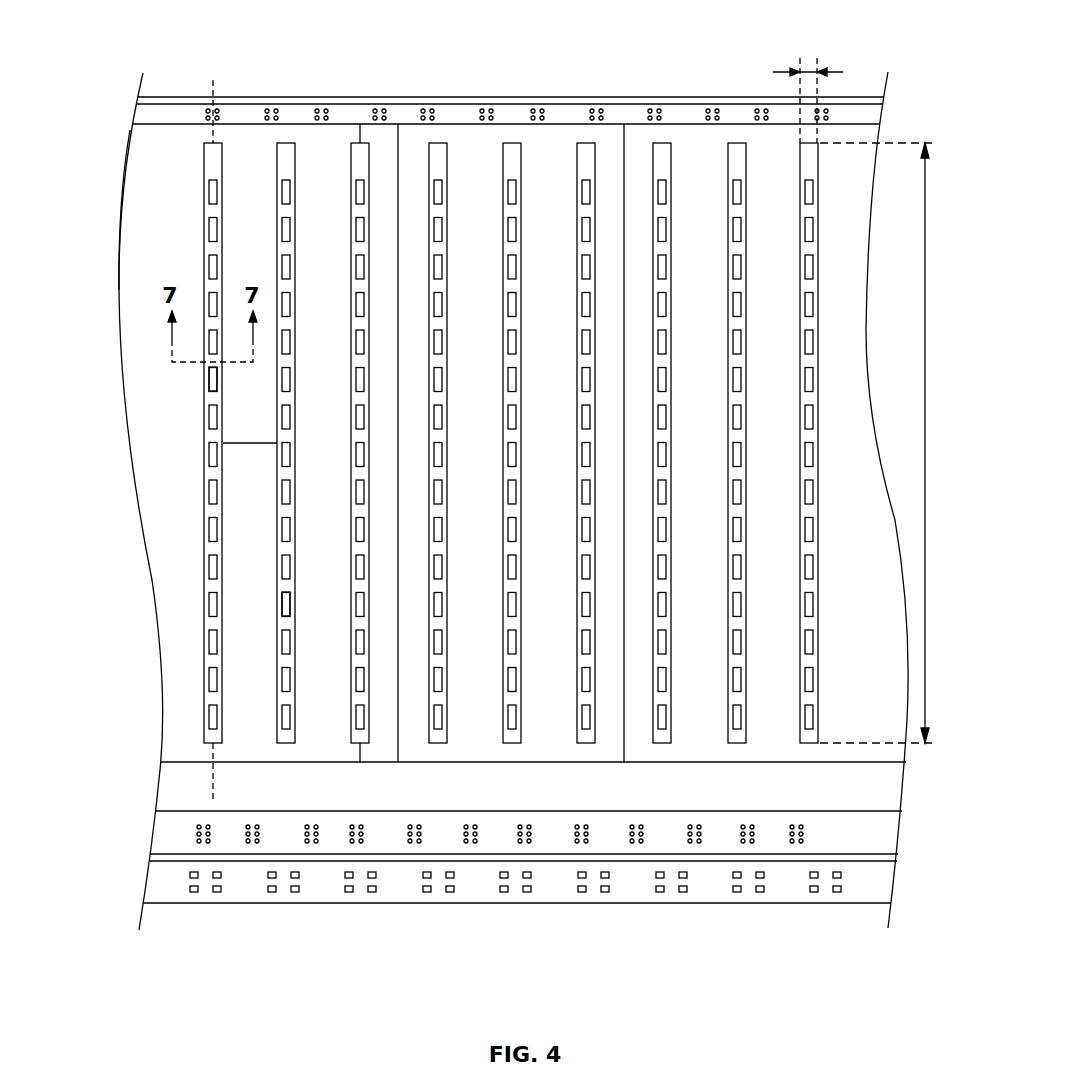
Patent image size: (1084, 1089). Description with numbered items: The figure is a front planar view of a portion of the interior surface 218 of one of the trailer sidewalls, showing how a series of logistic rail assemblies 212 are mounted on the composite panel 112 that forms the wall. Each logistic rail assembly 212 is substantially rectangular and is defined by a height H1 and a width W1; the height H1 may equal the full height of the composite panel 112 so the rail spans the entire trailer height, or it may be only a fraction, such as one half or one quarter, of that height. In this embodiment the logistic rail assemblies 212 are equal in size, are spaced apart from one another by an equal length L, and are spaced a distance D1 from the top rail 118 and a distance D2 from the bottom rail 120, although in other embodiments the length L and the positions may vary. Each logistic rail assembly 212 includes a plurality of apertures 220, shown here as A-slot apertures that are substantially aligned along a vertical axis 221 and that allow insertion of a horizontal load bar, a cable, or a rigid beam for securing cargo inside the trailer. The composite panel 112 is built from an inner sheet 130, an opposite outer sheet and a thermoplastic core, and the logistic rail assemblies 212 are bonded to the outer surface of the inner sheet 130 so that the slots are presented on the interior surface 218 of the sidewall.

The composite panel 112 is at (511, 387).
The top rail 118 is at (572, 113).
The bottom rail 120 is at (240, 890).
The inner sheet 130 is at (688, 170).
The logistic rail assembly 212 is at (290, 147).
The interior surface 218 is at (155, 184).
The aperture 220 is at (213, 380).
The vertical axis 221 is at (213, 783).
The length L is at (250, 443).
The distance D1 is at (360, 123).
The distance D2 is at (360, 752).
The width W1 is at (808, 72).
The height H1 is at (891, 443).